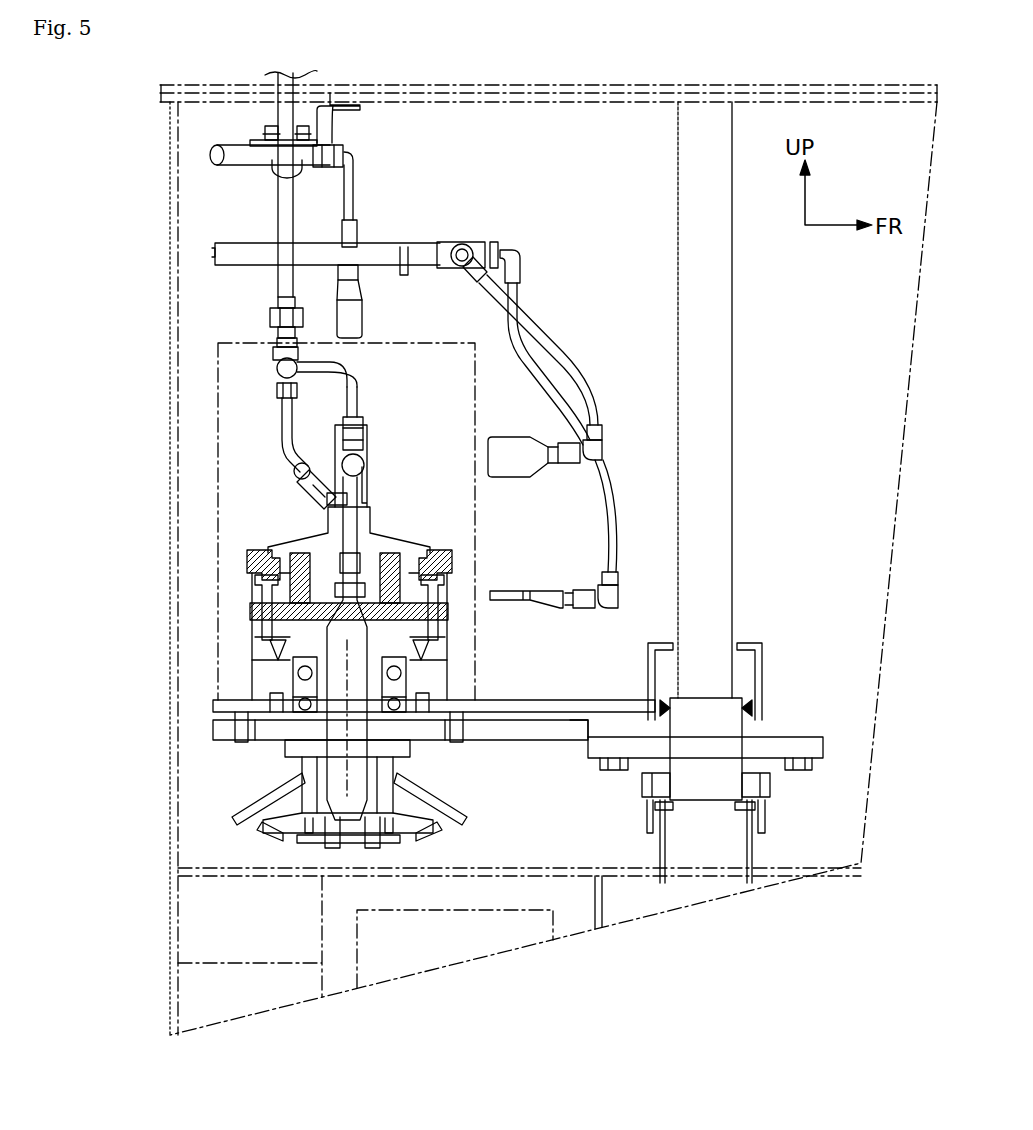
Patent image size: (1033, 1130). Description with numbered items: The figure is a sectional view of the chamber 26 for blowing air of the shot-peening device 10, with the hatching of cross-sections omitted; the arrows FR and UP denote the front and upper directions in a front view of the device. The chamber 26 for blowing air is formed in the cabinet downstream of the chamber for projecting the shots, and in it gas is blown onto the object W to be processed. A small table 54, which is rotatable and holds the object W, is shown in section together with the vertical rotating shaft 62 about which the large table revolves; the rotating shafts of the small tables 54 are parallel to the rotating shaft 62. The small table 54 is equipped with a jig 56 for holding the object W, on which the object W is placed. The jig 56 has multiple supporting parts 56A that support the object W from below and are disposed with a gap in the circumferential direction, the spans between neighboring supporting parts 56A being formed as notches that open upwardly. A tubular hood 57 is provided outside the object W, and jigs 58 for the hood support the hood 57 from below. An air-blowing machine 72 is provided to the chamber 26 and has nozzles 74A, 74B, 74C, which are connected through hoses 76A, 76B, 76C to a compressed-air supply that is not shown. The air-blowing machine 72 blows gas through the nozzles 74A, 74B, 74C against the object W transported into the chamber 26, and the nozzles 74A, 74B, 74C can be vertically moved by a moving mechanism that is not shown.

The shot-peening device 10 is at (150, 130).
The chamber for blowing air 26 is at (203, 312).
The air-blowing machine 72 is at (482, 205).
The rotating shaft 62 is at (732, 372).
The hose 76A is at (283, 421).
The hose 76B is at (352, 371).
The hose 76C is at (612, 515).
The nozzle 74A is at (328, 495).
The nozzle 74B is at (365, 465).
The nozzle 74C is at (505, 610).
The object to be processed W is at (380, 510).
The small table 54 is at (233, 613).
The jig 56 is at (288, 578).
The supporting part 56A is at (300, 556).
The hood 57 is at (475, 552).
The jig for the hood 58 is at (248, 595).